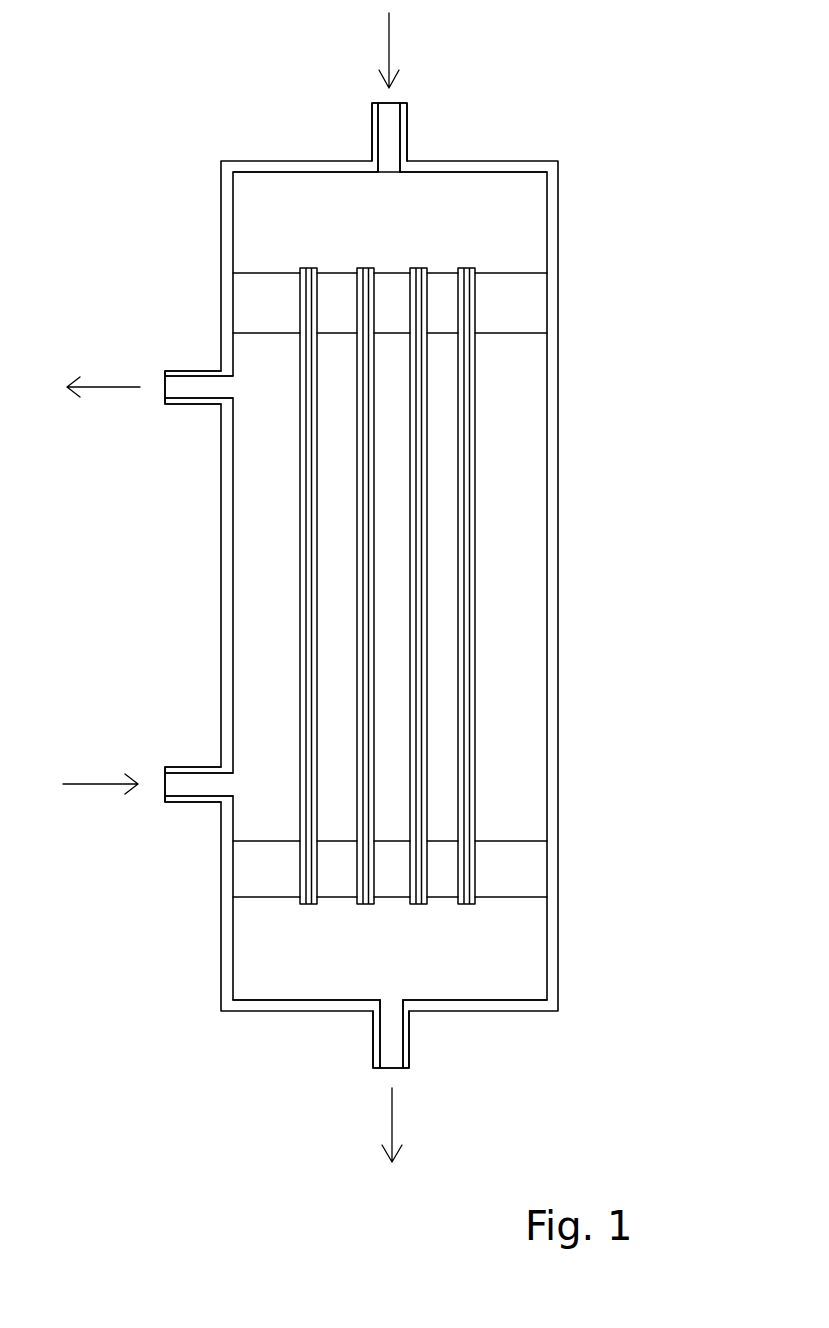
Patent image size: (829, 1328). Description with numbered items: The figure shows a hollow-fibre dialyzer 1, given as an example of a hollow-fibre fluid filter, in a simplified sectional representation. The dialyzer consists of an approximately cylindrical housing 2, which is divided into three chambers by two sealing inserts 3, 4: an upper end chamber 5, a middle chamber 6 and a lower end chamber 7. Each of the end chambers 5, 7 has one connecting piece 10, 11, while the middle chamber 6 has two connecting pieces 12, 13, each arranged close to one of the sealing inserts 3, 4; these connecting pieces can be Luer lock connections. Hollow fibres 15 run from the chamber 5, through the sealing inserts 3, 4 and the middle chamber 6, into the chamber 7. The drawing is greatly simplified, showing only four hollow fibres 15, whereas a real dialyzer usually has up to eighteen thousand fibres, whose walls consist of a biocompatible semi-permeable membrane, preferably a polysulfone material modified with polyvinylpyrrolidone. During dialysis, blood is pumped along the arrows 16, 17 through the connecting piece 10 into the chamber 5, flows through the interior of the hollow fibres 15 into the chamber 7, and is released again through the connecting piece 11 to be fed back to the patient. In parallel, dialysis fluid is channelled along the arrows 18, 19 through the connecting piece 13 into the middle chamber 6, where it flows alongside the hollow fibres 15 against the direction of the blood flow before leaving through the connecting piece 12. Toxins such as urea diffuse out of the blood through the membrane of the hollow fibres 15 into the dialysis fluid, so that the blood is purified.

The hollow-fibre dialyzer 1 is at (627, 106).
The housing 2 is at (560, 680).
The sealing insert 3 is at (520, 330).
The sealing insert 4 is at (525, 893).
The chamber 5 is at (527, 220).
The middle chamber 6 is at (525, 483).
The chamber 7 is at (505, 962).
The connecting piece 10 is at (408, 133).
The connecting piece 11 is at (408, 1050).
The connecting piece 12 is at (185, 368).
The connecting piece 13 is at (185, 765).
The hollow fibres 15 is at (476, 548).
The arrow 16 is at (388, 43).
The arrow 17 is at (393, 1120).
The arrow 18 is at (123, 784).
The arrow 19 is at (110, 390).